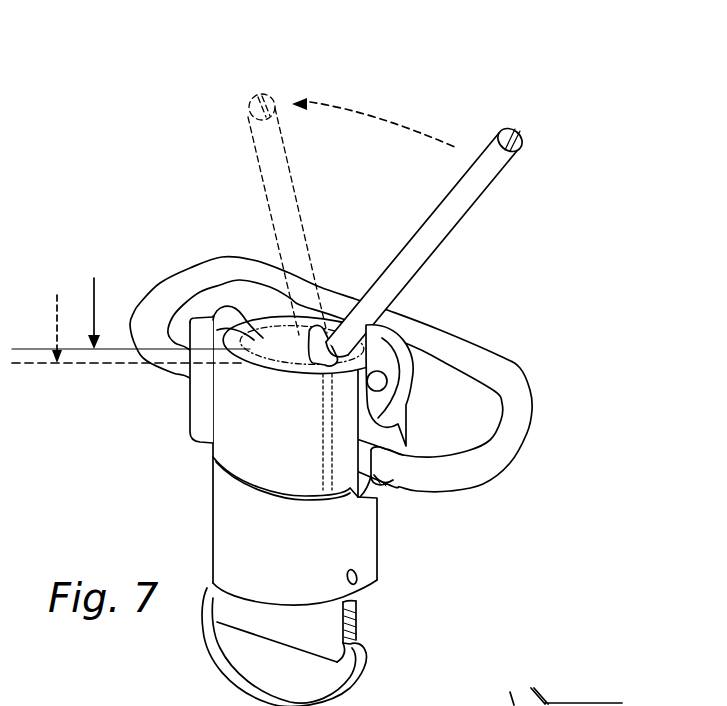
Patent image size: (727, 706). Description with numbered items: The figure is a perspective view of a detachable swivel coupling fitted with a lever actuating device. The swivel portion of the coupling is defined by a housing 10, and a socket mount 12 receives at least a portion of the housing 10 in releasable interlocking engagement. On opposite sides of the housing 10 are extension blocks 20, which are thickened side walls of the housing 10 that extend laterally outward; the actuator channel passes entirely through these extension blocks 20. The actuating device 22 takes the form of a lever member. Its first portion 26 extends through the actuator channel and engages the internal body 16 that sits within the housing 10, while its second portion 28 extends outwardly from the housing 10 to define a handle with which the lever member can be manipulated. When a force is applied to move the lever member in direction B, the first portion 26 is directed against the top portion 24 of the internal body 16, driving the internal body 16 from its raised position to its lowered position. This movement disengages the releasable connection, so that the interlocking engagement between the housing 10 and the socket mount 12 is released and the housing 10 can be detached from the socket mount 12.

The housing 10 is at (250, 440).
The socket mount 12 is at (352, 527).
The internal body 16 is at (258, 332).
The extension blocks 20 is at (203, 400).
The actuating device 22 is at (418, 256).
The top portion 24 is at (281, 315).
The first portion 26 is at (420, 373).
The second portion 28 is at (502, 177).
The direction B is at (333, 110).